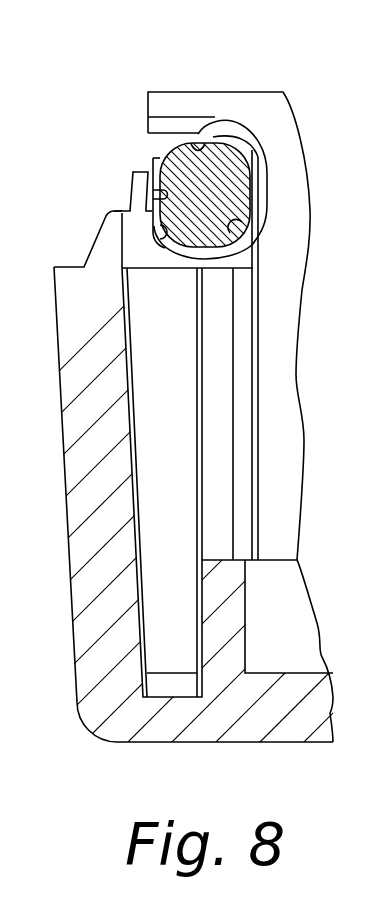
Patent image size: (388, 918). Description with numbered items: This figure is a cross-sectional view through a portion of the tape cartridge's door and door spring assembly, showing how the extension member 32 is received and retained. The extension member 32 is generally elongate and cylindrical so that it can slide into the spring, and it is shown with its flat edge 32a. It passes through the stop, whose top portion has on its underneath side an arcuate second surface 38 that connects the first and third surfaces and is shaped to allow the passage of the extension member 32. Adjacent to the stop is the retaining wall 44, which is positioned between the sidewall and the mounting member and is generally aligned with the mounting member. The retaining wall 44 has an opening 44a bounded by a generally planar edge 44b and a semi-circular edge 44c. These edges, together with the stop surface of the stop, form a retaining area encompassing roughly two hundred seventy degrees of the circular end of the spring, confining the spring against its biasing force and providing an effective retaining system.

The extension member 32 is at (231, 170).
The flat edge 32a is at (157, 166).
The second surface 38 is at (193, 143).
The retaining wall 44 is at (137, 210).
The opening 44a is at (167, 233).
The planar edge 44b is at (163, 196).
The semi-circular edge 44c is at (236, 228).